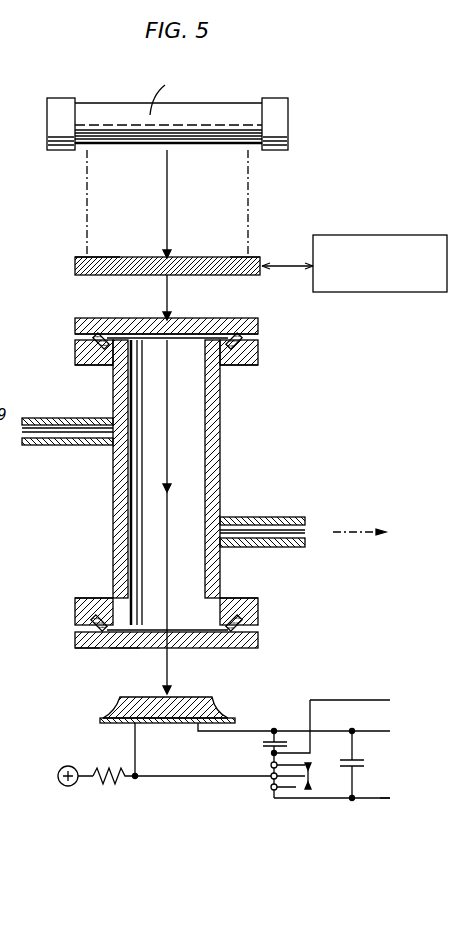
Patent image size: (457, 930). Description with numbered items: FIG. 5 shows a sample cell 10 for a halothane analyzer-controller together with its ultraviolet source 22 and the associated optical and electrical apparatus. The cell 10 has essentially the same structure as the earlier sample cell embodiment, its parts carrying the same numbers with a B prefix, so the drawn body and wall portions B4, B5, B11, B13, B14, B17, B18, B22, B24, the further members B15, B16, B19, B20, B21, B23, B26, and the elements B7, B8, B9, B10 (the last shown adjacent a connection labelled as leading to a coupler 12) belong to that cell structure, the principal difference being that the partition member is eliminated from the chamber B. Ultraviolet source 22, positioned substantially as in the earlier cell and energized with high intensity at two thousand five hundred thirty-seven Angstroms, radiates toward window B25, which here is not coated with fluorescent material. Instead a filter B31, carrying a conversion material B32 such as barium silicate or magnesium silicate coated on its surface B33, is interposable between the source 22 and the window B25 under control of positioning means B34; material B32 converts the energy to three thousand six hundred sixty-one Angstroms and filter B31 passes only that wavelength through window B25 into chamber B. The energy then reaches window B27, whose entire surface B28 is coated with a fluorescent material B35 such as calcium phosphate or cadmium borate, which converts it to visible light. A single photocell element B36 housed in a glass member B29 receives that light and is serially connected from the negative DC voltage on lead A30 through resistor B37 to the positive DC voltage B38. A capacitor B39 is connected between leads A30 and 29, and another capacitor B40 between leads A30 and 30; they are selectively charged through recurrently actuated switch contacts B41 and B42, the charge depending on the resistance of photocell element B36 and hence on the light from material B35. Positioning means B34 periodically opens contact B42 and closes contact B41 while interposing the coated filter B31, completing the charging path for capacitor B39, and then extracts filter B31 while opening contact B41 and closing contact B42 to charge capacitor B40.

The ultraviolet source 22 is at (108, 103).
The filter B31 is at (75, 270).
The surface B33 is at (76, 263).
The conversion material B32 is at (255, 257).
The positioning means B34 is at (345, 235).
The window B25 is at (207, 318).
The top plate lower face B26 is at (240, 318).
The window B19 is at (101, 333).
The upper flange left B11 is at (75, 353).
The upper flange right B18 is at (258, 355).
The seal B15 is at (82, 341).
The seal B16 is at (240, 339).
The flange face B17 is at (95, 365).
The cylinder wall left B4 is at (113, 518).
The cylinder wall right B5 is at (221, 426).
The cell 10 is at (240, 396).
The chamber B is at (162, 517).
The inlet pipe B7 is at (62, 447).
The inlet pipe bore B8 is at (80, 428).
The outlet pipe B9 is at (250, 518).
The outlet pipe bore B10 is at (246, 534).
The coupler 12 is at (369, 511).
The lower flange left B13 is at (75, 610).
The lower flange right B14 is at (258, 605).
The flange face B22 is at (103, 605).
The flange face B24 is at (235, 600).
The seal B20 is at (78, 628).
The seal B21 is at (258, 630).
The window B23 is at (100, 645).
The window B27 is at (258, 645).
The fluorescent material B35 is at (80, 648).
The surface B28 is at (120, 648).
The glass member B29 is at (118, 703).
The photocell element B36 is at (100, 720).
The positive DC voltage B38 is at (78, 766).
The resistor B37 is at (115, 782).
The capacitor B40 is at (258, 745).
The lead 30 is at (385, 700).
The lead A30 is at (385, 731).
The switch contact B42 is at (325, 760).
The switch contact B41 is at (310, 780).
The capacitor B39 is at (362, 764).
The lead 29 is at (385, 798).